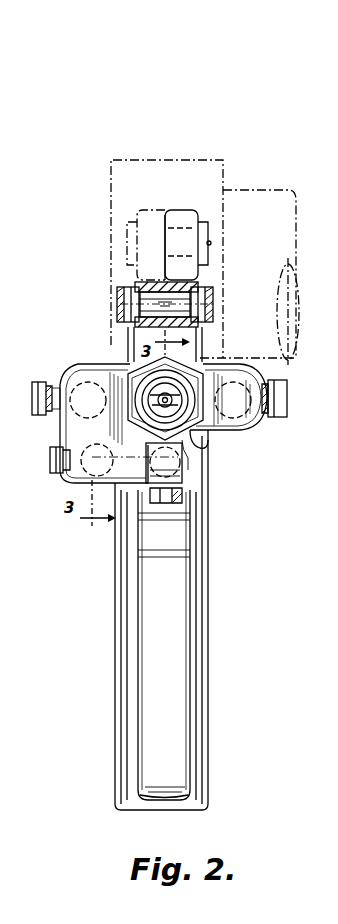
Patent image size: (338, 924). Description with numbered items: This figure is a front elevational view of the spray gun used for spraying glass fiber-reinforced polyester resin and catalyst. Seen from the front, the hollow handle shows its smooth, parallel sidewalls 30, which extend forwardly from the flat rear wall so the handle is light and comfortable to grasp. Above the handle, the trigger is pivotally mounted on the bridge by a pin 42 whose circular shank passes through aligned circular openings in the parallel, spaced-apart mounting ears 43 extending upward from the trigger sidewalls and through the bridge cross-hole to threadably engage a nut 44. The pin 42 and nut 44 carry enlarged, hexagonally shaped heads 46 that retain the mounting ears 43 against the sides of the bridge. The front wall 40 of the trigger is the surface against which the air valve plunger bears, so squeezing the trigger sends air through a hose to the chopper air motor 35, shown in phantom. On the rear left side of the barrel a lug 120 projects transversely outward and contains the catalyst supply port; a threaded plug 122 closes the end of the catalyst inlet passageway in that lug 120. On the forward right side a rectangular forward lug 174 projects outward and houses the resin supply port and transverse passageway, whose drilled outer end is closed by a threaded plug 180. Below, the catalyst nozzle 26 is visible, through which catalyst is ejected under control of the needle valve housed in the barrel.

The chopper air motor 35 is at (257, 193).
The nut 44 is at (225, 311).
The pin 42 is at (125, 330).
The hexagonally shaped heads 46 is at (116, 296).
The mounting ears 43 is at (128, 346).
The lug 120 is at (62, 432).
The forward lug 174 is at (255, 433).
The threaded plug 180 is at (285, 400).
The threaded plug 122 is at (37, 384).
The nozzle 26 is at (188, 480).
The sidewalls 30 is at (205, 661).
The front wall 40 is at (146, 618).